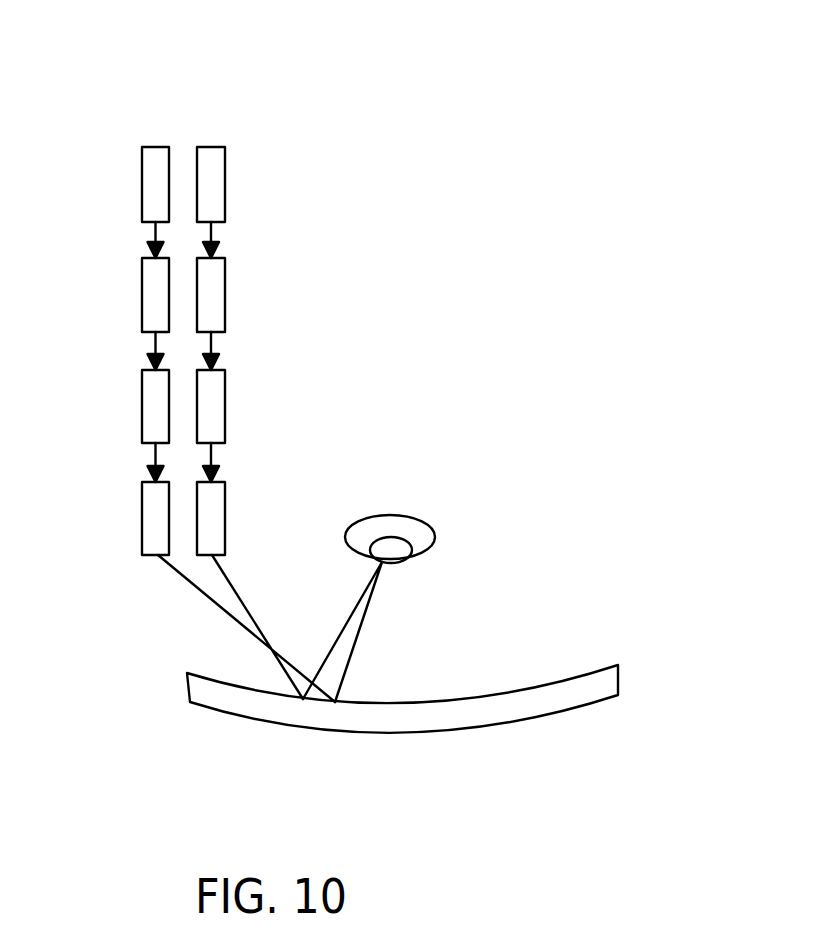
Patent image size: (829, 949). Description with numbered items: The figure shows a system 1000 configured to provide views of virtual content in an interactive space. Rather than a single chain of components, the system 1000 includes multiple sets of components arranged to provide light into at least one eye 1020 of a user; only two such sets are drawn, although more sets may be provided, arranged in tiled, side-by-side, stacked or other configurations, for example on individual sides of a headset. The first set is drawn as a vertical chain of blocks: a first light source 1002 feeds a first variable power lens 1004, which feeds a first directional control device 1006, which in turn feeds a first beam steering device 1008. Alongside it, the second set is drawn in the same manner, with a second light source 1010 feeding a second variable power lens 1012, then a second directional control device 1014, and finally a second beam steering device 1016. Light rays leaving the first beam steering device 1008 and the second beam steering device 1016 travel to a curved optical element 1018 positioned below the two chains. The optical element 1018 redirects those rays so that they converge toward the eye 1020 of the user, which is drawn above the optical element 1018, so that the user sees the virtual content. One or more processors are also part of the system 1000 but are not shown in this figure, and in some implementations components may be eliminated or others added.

The system 1000 is at (398, 67).
The first light source 1002 is at (141, 183).
The first variable power lens 1004 is at (141, 307).
The first directional control device 1006 is at (141, 405).
The first beam steering device 1008 is at (141, 542).
The second light source 1010 is at (226, 153).
The second variable power lens 1012 is at (226, 289).
The second directional control device 1014 is at (226, 401).
The second beam steering device 1016 is at (226, 513).
The optical element 1018 is at (185, 683).
The eye 1020 is at (357, 517).